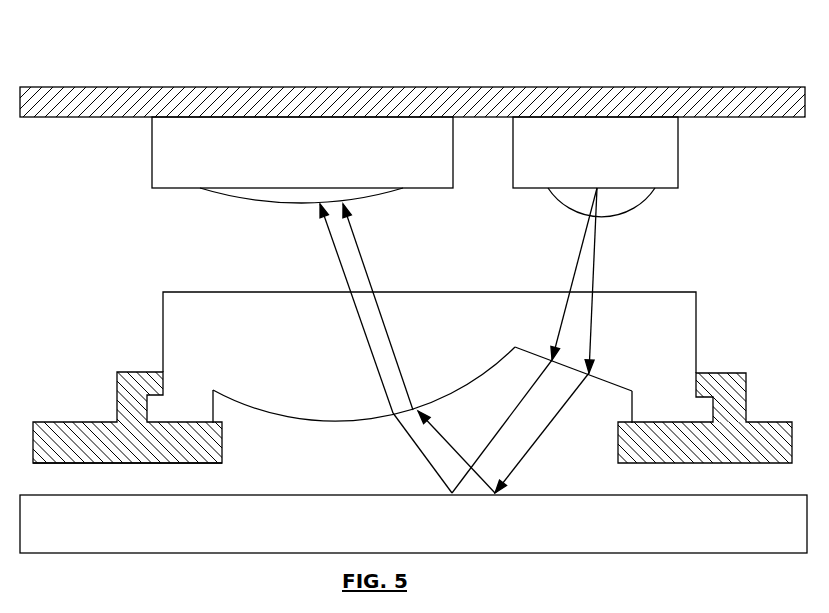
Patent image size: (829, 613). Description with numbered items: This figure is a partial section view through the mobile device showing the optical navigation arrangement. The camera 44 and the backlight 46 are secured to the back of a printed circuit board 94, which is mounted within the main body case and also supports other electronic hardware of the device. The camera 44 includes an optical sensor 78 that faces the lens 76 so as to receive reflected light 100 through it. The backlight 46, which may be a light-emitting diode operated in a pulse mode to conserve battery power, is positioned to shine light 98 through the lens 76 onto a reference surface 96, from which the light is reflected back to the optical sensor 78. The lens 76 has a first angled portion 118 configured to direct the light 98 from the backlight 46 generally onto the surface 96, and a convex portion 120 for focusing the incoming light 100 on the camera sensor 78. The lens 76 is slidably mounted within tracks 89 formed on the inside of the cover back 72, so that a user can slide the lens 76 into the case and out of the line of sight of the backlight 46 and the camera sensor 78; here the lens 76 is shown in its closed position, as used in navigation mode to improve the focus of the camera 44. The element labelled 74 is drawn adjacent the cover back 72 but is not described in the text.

The printed circuit board 94 is at (135, 87).
The camera 44 is at (152, 173).
The backlight 46 is at (678, 176).
The optical sensor 78 is at (252, 200).
The reflected light 100 is at (356, 258).
The light 98 is at (594, 263).
The tracks 89 is at (153, 372).
The cover back 72 is at (414, 403).
The base of support member 74 is at (241, 460).
The lens 76 is at (422, 395).
The reference surface 96 is at (378, 494).
The convex portion 120 is at (446, 397).
The first angled portion 118 is at (609, 383).